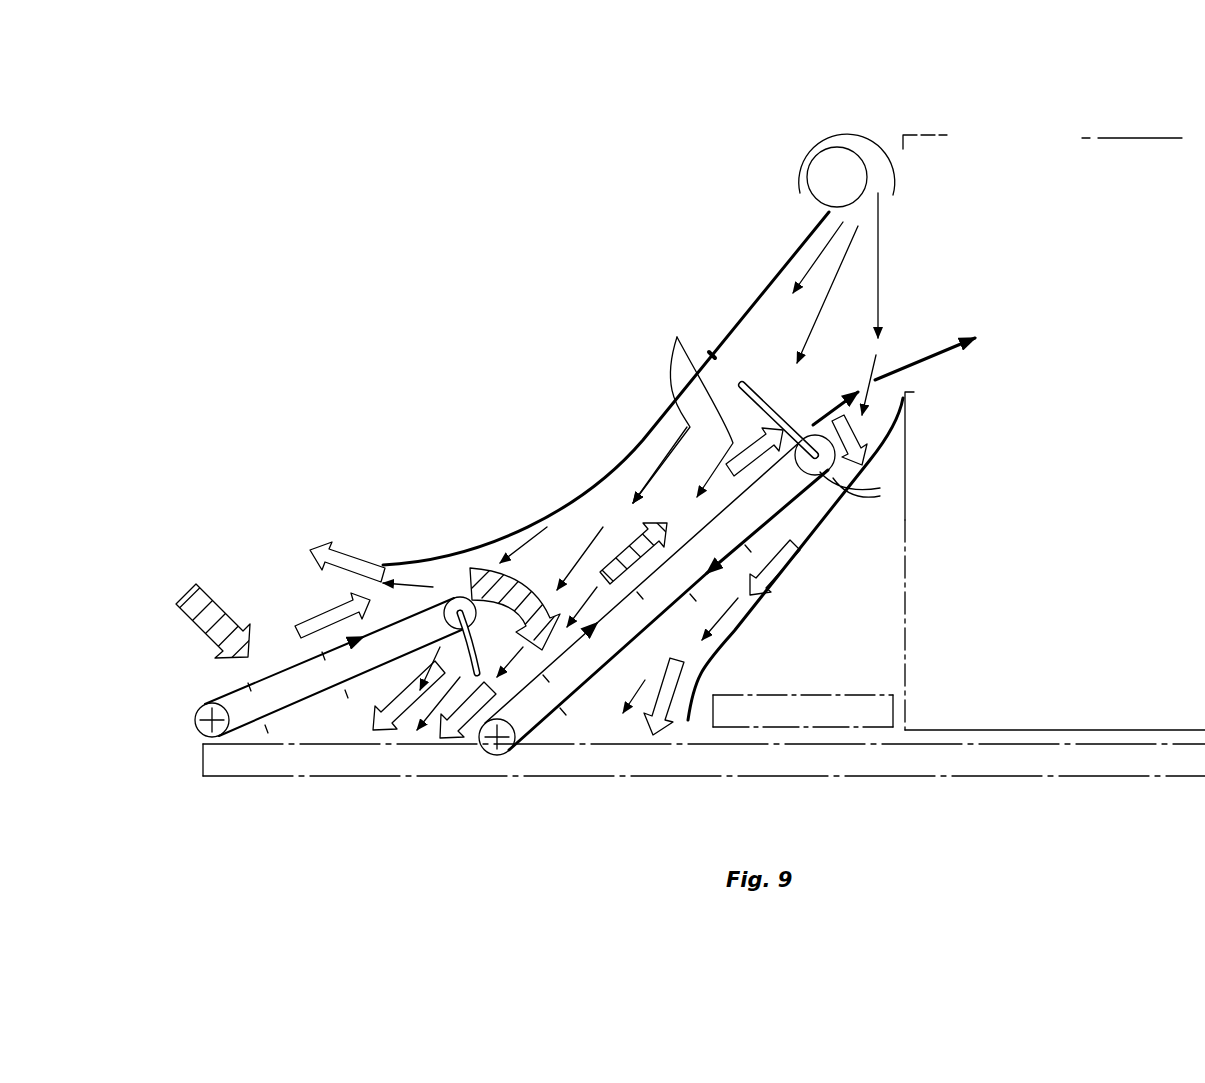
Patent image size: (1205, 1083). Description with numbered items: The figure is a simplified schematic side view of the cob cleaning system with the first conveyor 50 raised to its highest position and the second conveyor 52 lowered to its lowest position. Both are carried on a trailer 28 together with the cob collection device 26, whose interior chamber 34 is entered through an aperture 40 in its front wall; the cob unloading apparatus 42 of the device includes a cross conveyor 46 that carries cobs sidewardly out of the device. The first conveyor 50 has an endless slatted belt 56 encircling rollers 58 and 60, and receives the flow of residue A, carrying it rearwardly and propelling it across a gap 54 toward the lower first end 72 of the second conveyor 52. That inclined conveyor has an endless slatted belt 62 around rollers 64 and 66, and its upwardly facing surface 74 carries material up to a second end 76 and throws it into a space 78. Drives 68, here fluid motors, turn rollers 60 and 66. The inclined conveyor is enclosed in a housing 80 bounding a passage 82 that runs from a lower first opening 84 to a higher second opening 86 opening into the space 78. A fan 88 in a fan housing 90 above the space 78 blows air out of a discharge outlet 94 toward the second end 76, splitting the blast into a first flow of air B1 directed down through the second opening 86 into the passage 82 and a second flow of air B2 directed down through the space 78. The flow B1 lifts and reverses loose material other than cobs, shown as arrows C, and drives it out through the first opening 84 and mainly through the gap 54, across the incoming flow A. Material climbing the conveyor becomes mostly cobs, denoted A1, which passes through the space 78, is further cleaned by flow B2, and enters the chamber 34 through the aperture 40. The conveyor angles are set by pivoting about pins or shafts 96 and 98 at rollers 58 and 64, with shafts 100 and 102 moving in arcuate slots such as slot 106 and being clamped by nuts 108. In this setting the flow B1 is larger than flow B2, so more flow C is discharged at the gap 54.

The cob collection device 26 is at (1134, 130).
The trailer 28 is at (737, 777).
The chamber 34 is at (1142, 447).
The aperture 40 is at (920, 373).
The cob unloading apparatus 42 is at (842, 759).
The cross conveyor 46 is at (868, 727).
The first conveyor 50 is at (323, 717).
The endless slatted belt 56 is at (323, 717).
The second conveyor 52 is at (656, 639).
The endless slatted belt 62 is at (518, 748).
The gap 54 is at (245, 732).
The roller 58 is at (200, 728).
The roller 60 is at (457, 597).
The drives 68 is at (835, 468).
The roller 64 is at (500, 757).
The roller 66 is at (902, 474).
The lower first end 72 is at (506, 561).
The upwardly facing surface 74 is at (545, 665).
The second end 76 is at (780, 455).
The space 78 is at (883, 397).
The housing 80 is at (582, 388).
The passage 82 is at (785, 308).
The first opening 84 is at (582, 388).
The second opening 86 is at (582, 388).
The fan 88 is at (830, 150).
The fan housing 90 is at (876, 136).
The discharge outlet 94 is at (893, 200).
The pin or shaft 96 is at (205, 717).
The pin or shaft 98 is at (477, 690).
The pin or shaft 100 is at (440, 607).
The pin or shaft 102 is at (930, 473).
The nuts 108 is at (840, 478).
The arcuate slot 106 is at (916, 304).
The flow of residue A is at (220, 610).
The flow of mostly cobs A1 is at (933, 345).
The first flow of air B1 is at (850, 245).
The second flow of air B2 is at (880, 258).
The MOC flow C is at (370, 713).